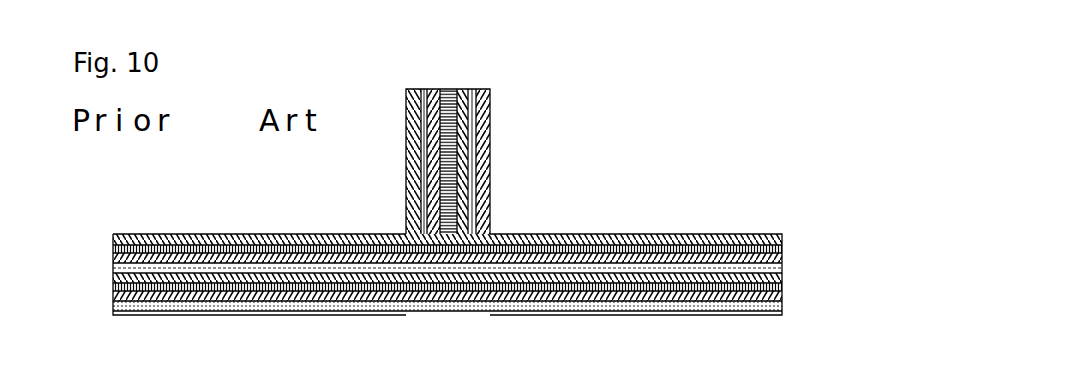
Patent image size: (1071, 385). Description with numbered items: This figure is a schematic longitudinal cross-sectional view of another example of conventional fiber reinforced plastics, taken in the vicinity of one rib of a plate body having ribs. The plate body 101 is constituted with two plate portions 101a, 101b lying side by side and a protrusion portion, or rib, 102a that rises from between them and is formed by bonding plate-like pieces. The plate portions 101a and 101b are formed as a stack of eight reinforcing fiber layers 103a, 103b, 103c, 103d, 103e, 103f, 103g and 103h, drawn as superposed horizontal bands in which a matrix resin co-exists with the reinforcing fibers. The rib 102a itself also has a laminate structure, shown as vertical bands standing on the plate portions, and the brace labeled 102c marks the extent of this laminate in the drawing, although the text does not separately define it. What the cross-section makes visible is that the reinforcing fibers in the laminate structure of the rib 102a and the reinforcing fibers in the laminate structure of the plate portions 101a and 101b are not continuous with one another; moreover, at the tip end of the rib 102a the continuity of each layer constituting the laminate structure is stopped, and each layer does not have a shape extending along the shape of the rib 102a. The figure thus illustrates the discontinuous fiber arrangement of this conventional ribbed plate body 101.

The plate body 101 is at (365, 152).
The plate portion 101a is at (775, 233).
The plate portion 101b is at (382, 235).
The protrusion portion (rib) 102a is at (534, 161).
The electrode layer stack 102c is at (497, 89).
The reinforcing fiber layer 103a is at (782, 236).
The reinforcing fiber layer 103b is at (782, 246).
The reinforcing fiber layer 103c is at (782, 257).
The reinforcing fiber layer 103d is at (782, 268).
The reinforcing fiber layer 103e is at (782, 278).
The reinforcing fiber layer 103f is at (782, 288).
The reinforcing fiber layer 103g is at (782, 298).
The reinforcing fiber layer 103h is at (782, 309).